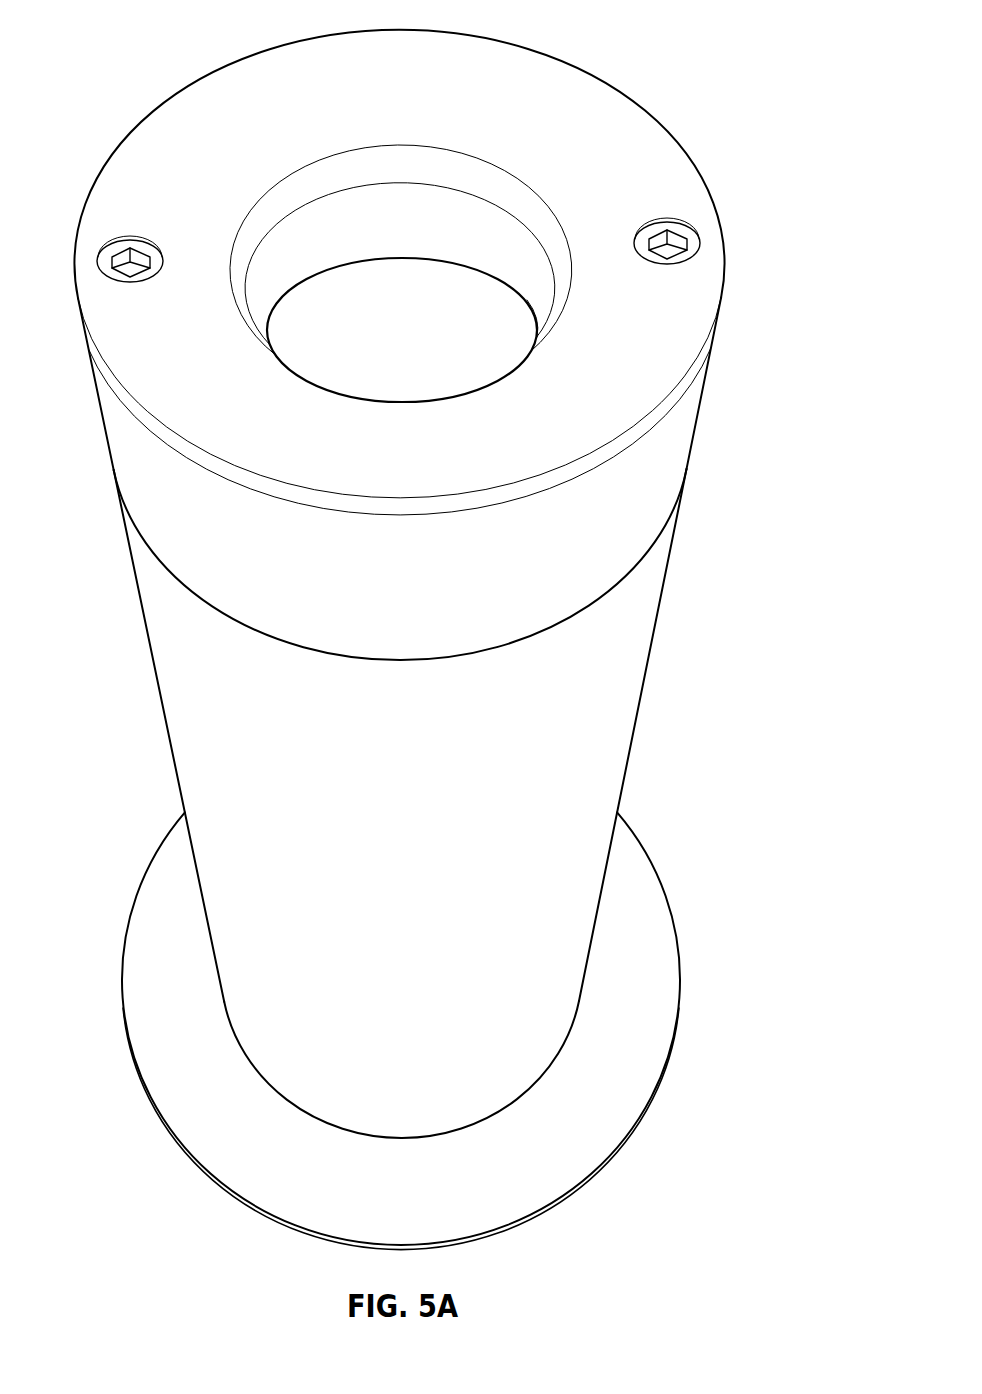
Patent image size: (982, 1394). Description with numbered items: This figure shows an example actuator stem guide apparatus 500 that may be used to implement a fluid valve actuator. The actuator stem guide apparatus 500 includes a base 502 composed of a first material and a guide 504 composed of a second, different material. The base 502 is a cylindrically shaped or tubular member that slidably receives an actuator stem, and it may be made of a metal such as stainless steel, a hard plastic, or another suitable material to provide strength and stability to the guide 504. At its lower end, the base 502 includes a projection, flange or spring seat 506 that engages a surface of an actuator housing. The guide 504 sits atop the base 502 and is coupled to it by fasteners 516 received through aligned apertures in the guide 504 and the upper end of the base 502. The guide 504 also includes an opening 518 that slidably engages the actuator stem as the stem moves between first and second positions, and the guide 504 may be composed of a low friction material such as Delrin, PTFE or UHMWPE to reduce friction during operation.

The actuator stem guide apparatus 500 is at (793, 43).
The base 502 is at (642, 693).
The guide 504 is at (662, 338).
The spring seat 506 is at (129, 1045).
The fasteners 516 is at (123, 253).
The opening 518 is at (372, 317).